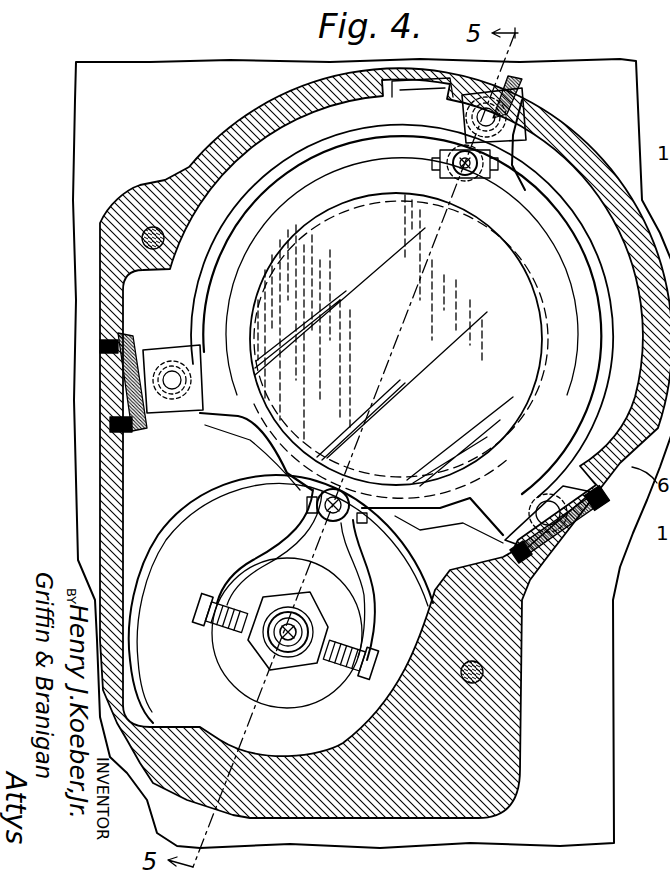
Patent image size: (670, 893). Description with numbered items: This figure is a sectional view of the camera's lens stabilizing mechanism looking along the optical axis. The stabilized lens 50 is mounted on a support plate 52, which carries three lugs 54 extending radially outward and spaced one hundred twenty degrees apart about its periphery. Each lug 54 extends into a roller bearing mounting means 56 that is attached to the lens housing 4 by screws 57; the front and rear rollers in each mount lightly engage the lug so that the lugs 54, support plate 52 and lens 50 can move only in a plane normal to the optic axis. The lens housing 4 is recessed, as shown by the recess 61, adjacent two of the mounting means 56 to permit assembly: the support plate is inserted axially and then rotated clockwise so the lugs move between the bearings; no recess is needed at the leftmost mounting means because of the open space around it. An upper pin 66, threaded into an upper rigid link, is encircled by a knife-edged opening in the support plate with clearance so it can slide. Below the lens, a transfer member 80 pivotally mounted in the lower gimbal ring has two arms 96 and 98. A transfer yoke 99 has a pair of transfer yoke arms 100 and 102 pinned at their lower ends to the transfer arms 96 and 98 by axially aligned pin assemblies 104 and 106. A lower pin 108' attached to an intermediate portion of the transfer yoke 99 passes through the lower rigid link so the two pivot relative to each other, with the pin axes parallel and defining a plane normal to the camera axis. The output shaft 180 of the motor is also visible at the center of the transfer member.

The lens housing 4 is at (277, 180).
The stabilized lens 50 is at (363, 217).
The support plate 52 is at (230, 397).
The lugs 54 is at (522, 130).
The roller bearing mounting means 56 is at (522, 83).
The screws 57 is at (100, 347).
The recess 61 is at (415, 87).
The upper pin 66 is at (468, 177).
The transfer member 80 is at (233, 672).
The transfer arm 96 is at (243, 597).
The transfer arm 98 is at (350, 620).
The transfer yoke 99 is at (240, 133).
The transfer yoke arm 100 is at (273, 538).
The transfer yoke arm 102 is at (374, 587).
The pin assembly 104 is at (200, 597).
The pin assembly 106 is at (377, 660).
The lower pin 108' is at (312, 506).
The output shaft 180 is at (290, 650).